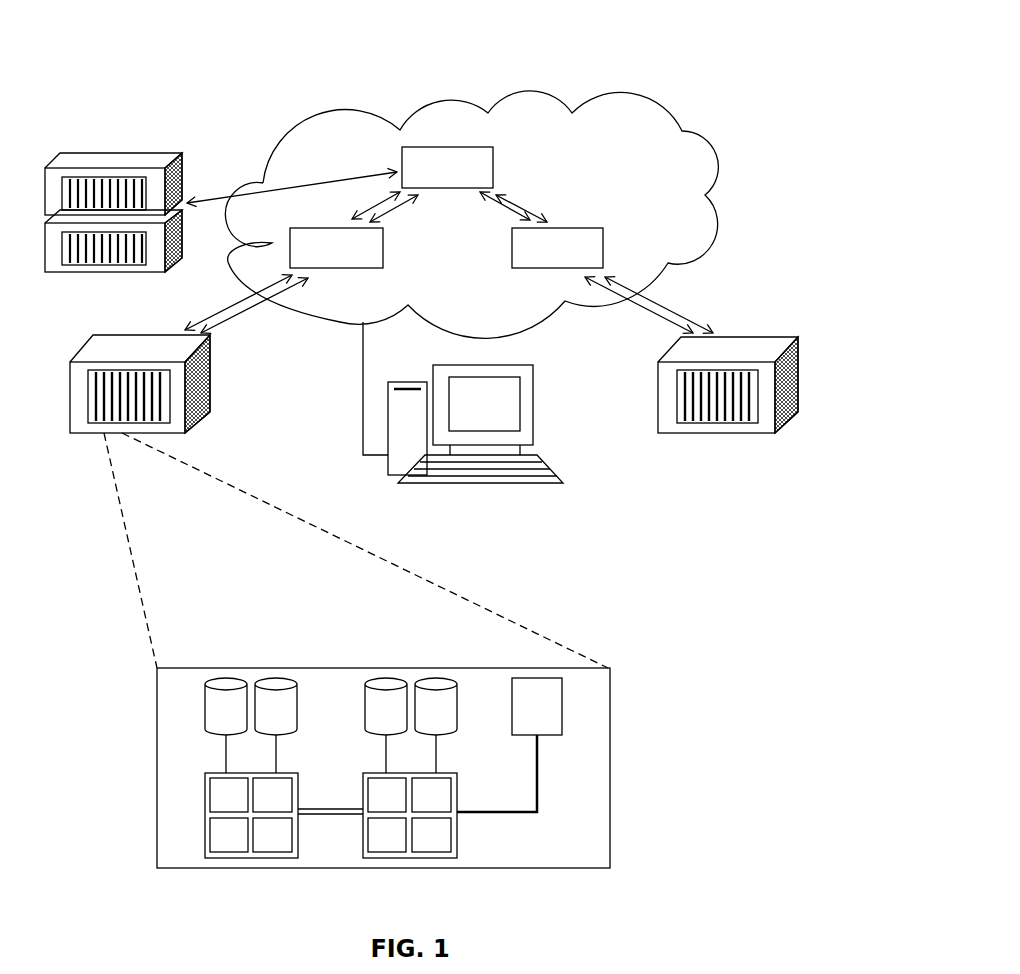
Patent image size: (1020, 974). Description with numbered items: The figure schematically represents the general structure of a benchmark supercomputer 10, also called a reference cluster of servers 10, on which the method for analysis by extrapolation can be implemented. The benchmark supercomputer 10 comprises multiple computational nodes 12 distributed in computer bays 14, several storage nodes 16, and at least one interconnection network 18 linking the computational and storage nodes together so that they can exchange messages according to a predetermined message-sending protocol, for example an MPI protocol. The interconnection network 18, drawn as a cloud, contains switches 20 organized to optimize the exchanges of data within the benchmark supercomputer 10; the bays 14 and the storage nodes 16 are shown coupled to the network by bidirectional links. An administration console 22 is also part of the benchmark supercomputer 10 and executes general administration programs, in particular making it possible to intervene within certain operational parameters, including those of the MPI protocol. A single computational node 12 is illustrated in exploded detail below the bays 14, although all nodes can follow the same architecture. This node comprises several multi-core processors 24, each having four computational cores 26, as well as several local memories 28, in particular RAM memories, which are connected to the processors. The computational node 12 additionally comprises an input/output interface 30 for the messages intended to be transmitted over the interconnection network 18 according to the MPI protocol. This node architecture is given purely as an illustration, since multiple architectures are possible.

The benchmark supercomputer 10 is at (765, 95).
The computational node 12 is at (610, 797).
The computer bay 14 is at (207, 388).
The storage node 16 is at (120, 153).
The interconnection network 18 is at (596, 168).
The switch 20 is at (432, 181).
The administration console 22 is at (470, 417).
The multi-core processor 24 is at (204, 838).
The computational core 26 is at (280, 798).
The local memory 28 is at (277, 678).
The input/output interface 30 is at (522, 719).